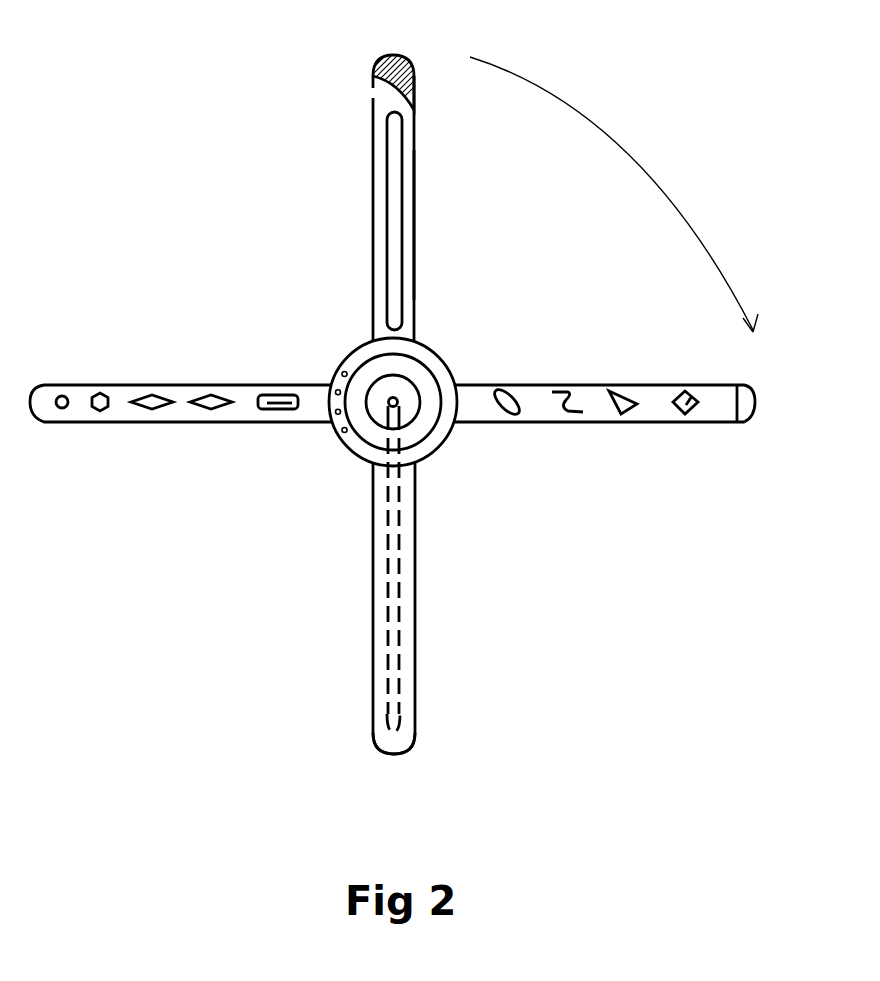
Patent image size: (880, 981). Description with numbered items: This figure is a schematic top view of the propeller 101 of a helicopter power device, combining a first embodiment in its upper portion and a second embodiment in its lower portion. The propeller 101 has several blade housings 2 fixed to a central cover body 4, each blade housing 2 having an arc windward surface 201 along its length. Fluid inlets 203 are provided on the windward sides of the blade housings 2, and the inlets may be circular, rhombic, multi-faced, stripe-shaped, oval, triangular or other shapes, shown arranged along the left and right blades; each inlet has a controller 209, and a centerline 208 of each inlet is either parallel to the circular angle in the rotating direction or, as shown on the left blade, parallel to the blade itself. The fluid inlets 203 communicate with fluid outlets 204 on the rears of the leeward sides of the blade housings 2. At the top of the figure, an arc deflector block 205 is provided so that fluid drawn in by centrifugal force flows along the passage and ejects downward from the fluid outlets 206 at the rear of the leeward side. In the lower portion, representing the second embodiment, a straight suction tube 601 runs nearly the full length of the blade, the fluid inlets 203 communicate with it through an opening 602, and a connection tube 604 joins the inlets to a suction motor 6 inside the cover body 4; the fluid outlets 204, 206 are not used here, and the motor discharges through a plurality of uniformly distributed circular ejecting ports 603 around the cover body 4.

The blade housing 2 is at (413, 152).
The cover body 4 is at (365, 352).
The suction motor 6 is at (428, 368).
The propeller 101 is at (540, 422).
The arc windward surface 201 is at (470, 208).
The fluid inlet 203 is at (394, 208).
The fluid outlet 204 is at (735, 422).
The arc deflector block 205 is at (383, 57).
The fluid outlet 206 is at (373, 88).
The centerline 208 is at (272, 410).
The controller 209 is at (394, 282).
The suction tube 601 is at (394, 523).
The opening 602 is at (393, 737).
The circular ejecting port 603 is at (340, 435).
The connection tube 604 is at (391, 400).